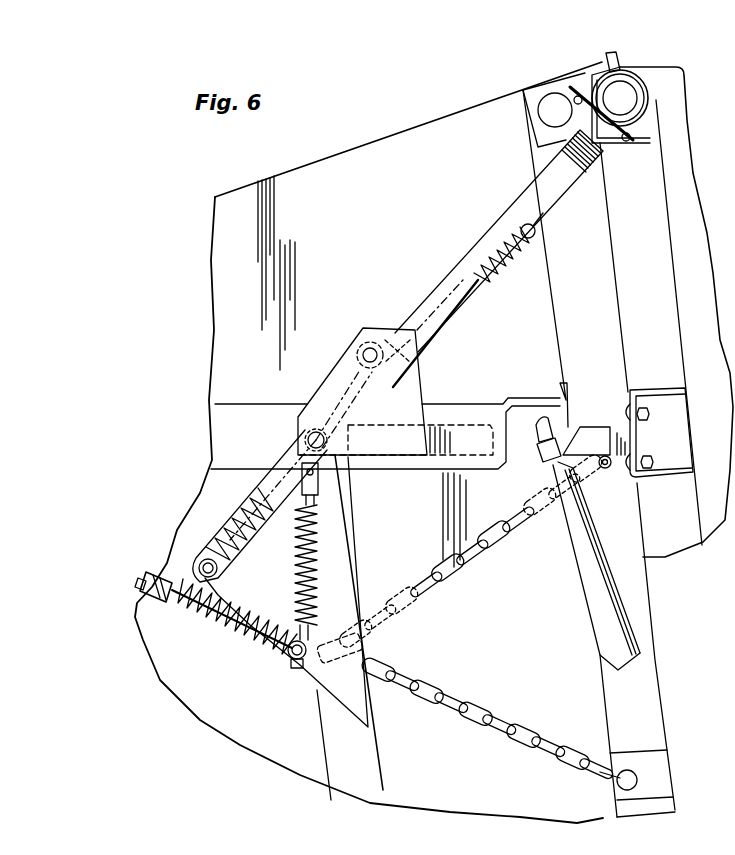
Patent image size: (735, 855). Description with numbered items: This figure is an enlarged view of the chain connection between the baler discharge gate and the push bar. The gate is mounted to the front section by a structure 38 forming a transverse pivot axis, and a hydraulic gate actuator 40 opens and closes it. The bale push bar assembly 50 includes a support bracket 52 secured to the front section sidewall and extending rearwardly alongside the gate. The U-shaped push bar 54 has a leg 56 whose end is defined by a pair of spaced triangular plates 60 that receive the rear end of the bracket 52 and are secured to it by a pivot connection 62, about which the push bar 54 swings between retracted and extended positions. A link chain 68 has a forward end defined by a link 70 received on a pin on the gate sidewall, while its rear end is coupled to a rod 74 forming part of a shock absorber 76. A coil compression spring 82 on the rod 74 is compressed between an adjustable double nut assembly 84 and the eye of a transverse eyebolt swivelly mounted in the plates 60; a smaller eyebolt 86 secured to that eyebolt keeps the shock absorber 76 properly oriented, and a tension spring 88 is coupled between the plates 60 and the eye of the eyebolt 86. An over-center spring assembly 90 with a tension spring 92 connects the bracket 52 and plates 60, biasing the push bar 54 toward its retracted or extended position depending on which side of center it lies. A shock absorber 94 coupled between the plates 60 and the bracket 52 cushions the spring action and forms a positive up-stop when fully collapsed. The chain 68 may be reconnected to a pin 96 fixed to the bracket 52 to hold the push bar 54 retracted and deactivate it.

The structure forming a transverse pivot axis 38 is at (626, 99).
The hydraulic gate actuator 40 is at (632, 636).
The bale push bar assembly 50 is at (297, 693).
The support bracket 52 is at (520, 190).
The U-shaped push bar 54 is at (385, 786).
The leg 56 is at (325, 762).
The triangular plate 60 is at (290, 656).
The pivot connection 62 is at (322, 447).
The link chain 68 is at (494, 548).
The link 70 is at (638, 779).
The rod 74 is at (356, 640).
The shock absorber 76 is at (217, 628).
The coil compression spring 82 is at (205, 620).
The adjustable double nut assembly 84 is at (163, 568).
The smaller eyebolt 86 is at (320, 617).
The tension spring 88 is at (297, 590).
The over-center spring assembly 90 is at (490, 288).
The tension spring 92 is at (500, 244).
The shock absorber 94 is at (280, 445).
The pin 96 is at (604, 456).